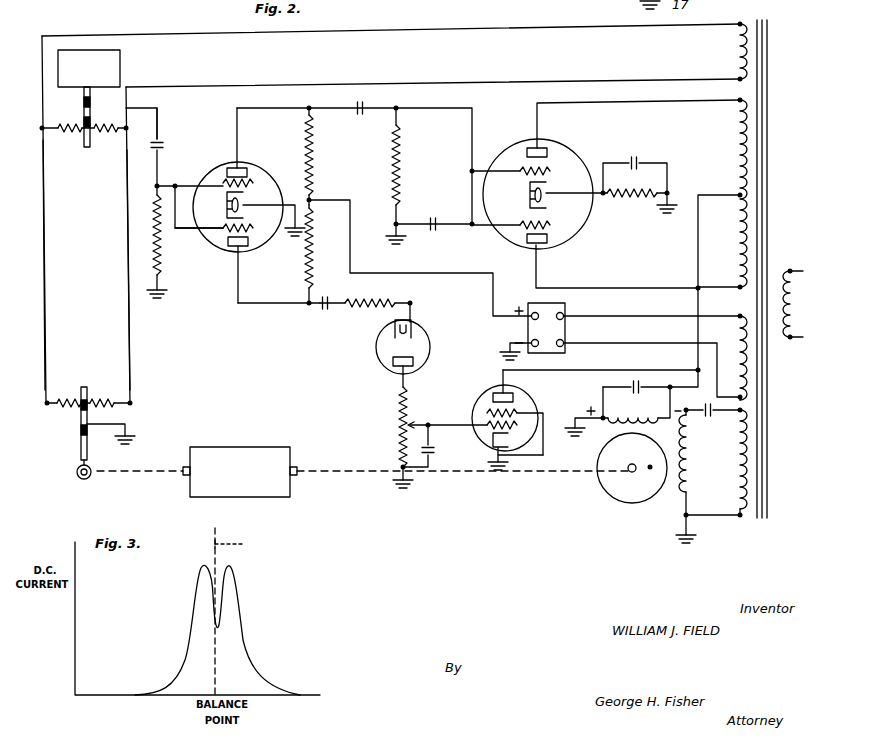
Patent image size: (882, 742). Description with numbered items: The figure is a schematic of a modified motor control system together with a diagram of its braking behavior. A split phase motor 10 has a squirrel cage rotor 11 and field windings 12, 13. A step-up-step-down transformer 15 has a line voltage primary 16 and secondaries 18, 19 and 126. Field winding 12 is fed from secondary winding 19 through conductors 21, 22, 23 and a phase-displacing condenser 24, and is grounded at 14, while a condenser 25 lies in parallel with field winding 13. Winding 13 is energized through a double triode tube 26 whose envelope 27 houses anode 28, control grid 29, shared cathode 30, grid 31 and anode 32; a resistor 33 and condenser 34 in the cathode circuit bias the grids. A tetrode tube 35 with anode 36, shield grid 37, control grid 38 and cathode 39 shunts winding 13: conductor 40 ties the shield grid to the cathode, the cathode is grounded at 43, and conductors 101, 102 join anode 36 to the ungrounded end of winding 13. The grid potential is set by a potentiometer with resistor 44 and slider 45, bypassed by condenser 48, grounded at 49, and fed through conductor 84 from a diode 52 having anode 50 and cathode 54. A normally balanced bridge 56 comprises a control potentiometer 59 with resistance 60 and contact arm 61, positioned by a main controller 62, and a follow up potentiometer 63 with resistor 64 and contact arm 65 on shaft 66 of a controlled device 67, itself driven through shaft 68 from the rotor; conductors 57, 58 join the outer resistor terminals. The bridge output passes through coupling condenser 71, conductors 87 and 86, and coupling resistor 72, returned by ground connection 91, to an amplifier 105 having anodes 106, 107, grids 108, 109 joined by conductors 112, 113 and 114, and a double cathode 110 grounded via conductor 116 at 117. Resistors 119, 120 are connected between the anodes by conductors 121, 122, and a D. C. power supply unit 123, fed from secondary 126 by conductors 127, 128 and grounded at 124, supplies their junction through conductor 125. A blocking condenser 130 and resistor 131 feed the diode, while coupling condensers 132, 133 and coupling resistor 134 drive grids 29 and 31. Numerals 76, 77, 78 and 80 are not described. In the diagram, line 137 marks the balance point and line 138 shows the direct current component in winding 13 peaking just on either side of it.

In FIG. 2, the split phase motor 10 is at (598, 483).
In FIG. 2, the rotor 11 is at (625, 495).
In FIG. 2, the field winding 12 is at (687, 480).
In FIG. 2, the field winding 13 is at (603, 414).
In FIG. 2, the ground 14 is at (678, 537).
In FIG. 2, the step-up-step-down transformer 15 is at (788, 232).
In FIG. 2, the line voltage primary 16 is at (790, 337).
In FIG. 2, the secondary winding 18 is at (738, 146).
In FIG. 2, the secondary winding 19 is at (740, 467).
In FIG. 2, the conductor 21 is at (710, 516).
In FIG. 2, the conductor 22 is at (688, 408).
In FIG. 2, the conductor 23 is at (732, 414).
In FIG. 2, the condenser 24 is at (692, 446).
In FIG. 2, the condenser 25 is at (641, 382).
In FIG. 2, the electronic discharge tube 26 is at (496, 140).
In FIG. 2, the envelope 27 is at (547, 148).
In FIG. 2, the anode 28 is at (550, 170).
In FIG. 2, the control grid 29 is at (550, 190).
In FIG. 2, the cathode 30 is at (548, 189).
In FIG. 2, the grid 31 is at (555, 223).
In FIG. 2, the anode 32 is at (548, 241).
In FIG. 2, the resistor 33 is at (640, 196).
In FIG. 2, the condenser 34 is at (637, 162).
In FIG. 2, the tube 35 is at (482, 383).
In FIG. 2, the anode 36 is at (514, 395).
In FIG. 2, the shield grid 37 is at (489, 413).
In FIG. 2, the control grid 38 is at (488, 425).
In FIG. 2, the cathode 39 is at (500, 448).
In FIG. 2, the conductor 40 is at (545, 455).
In FIG. 2, the ground 43 is at (518, 471).
In FIG. 2, the resistor 44 is at (395, 405).
In FIG. 2, the slider 45 is at (406, 420).
In FIG. 2, the condenser 48 is at (436, 449).
In FIG. 2, the ground 49 is at (395, 481).
In FIG. 2, the anode 50 is at (413, 362).
In FIG. 2, the diode 52 is at (420, 320).
In FIG. 2, the cathode 54 is at (412, 330).
In FIG. 2, the bridge 56 is at (47, 312).
In FIG. 2, the conductor 57 is at (47, 252).
In FIG. 2, the conductor 58 is at (132, 342).
In FIG. 2, the control potentiometer 59 is at (78, 132).
In FIG. 2, the resistance 60 is at (99, 128).
In FIG. 2, the contact arm 61 is at (92, 148).
In FIG. 2, the main controller 62 is at (121, 58).
In FIG. 2, the follow up potentiometer 63 is at (72, 392).
In FIG. 2, the resistor 64 is at (100, 394).
In FIG. 2, the contact arm 65 is at (80, 423).
In FIG. 2, the shaft 66 is at (125, 472).
In FIG. 2, the controlled device 67 is at (222, 447).
In FIG. 2, the shaft 68 is at (340, 467).
In FIG. 2, the coupling condenser 71 is at (161, 132).
In FIG. 2, the coupling resistor 72 is at (161, 254).
In FIG. 2, the junction 76 is at (603, 194).
In FIG. 2, the ground 77 is at (670, 206).
In FIG. 2, the ground 78 is at (572, 423).
In FIG. 2, the conductor 80 is at (699, 250).
In FIG. 2, the conductor 84 is at (458, 425).
In FIG. 2, the conductor 86 is at (164, 150).
In FIG. 2, the conductor 87 is at (157, 108).
In FIG. 2, the ground connection 91 is at (129, 436).
In FIG. 2, the conductor 101 is at (578, 370).
In FIG. 2, the conductor 102 is at (683, 388).
In FIG. 2, the amplifier 105 is at (216, 160).
In FIG. 2, the anode 106 is at (248, 170).
In FIG. 2, the anode 107 is at (242, 252).
In FIG. 2, the control grid 108 is at (253, 183).
In FIG. 2, the control grid 109 is at (230, 238).
In FIG. 2, the double cathode 110 is at (244, 201).
In FIG. 2, the conductor 112 is at (180, 192).
In FIG. 2, the conductor 113 is at (196, 230).
In FIG. 2, the conductor 114 is at (175, 184).
In FIG. 2, the conductor 116 is at (291, 220).
In FIG. 2, the ground 117 is at (297, 238).
In FIG. 2, the resistor 119 is at (313, 144).
In FIG. 2, the resistor 120 is at (313, 253).
In FIG. 2, the conductor 121 is at (283, 107).
In FIG. 2, the conductor 122 is at (258, 304).
In FIG. 2, the D. C. power supply unit 123 is at (566, 311).
In FIG. 2, the ground 124 is at (505, 346).
In FIG. 2, the conductor 125 is at (493, 297).
In FIG. 2, the secondary 126 is at (740, 348).
In FIG. 2, the conductor 127 is at (636, 312).
In FIG. 2, the conductor 128 is at (655, 337).
In FIG. 2, the blocking condenser 130 is at (320, 309).
In FIG. 2, the resistor 131 is at (362, 300).
In FIG. 2, the coupling condenser 132 is at (362, 107).
In FIG. 2, the coupling condenser 133 is at (437, 223).
In FIG. 2, the coupling resistor 134 is at (402, 138).
In FIG. 3, the line 137 is at (244, 611).
In FIG. 3, the line 138 is at (238, 608).